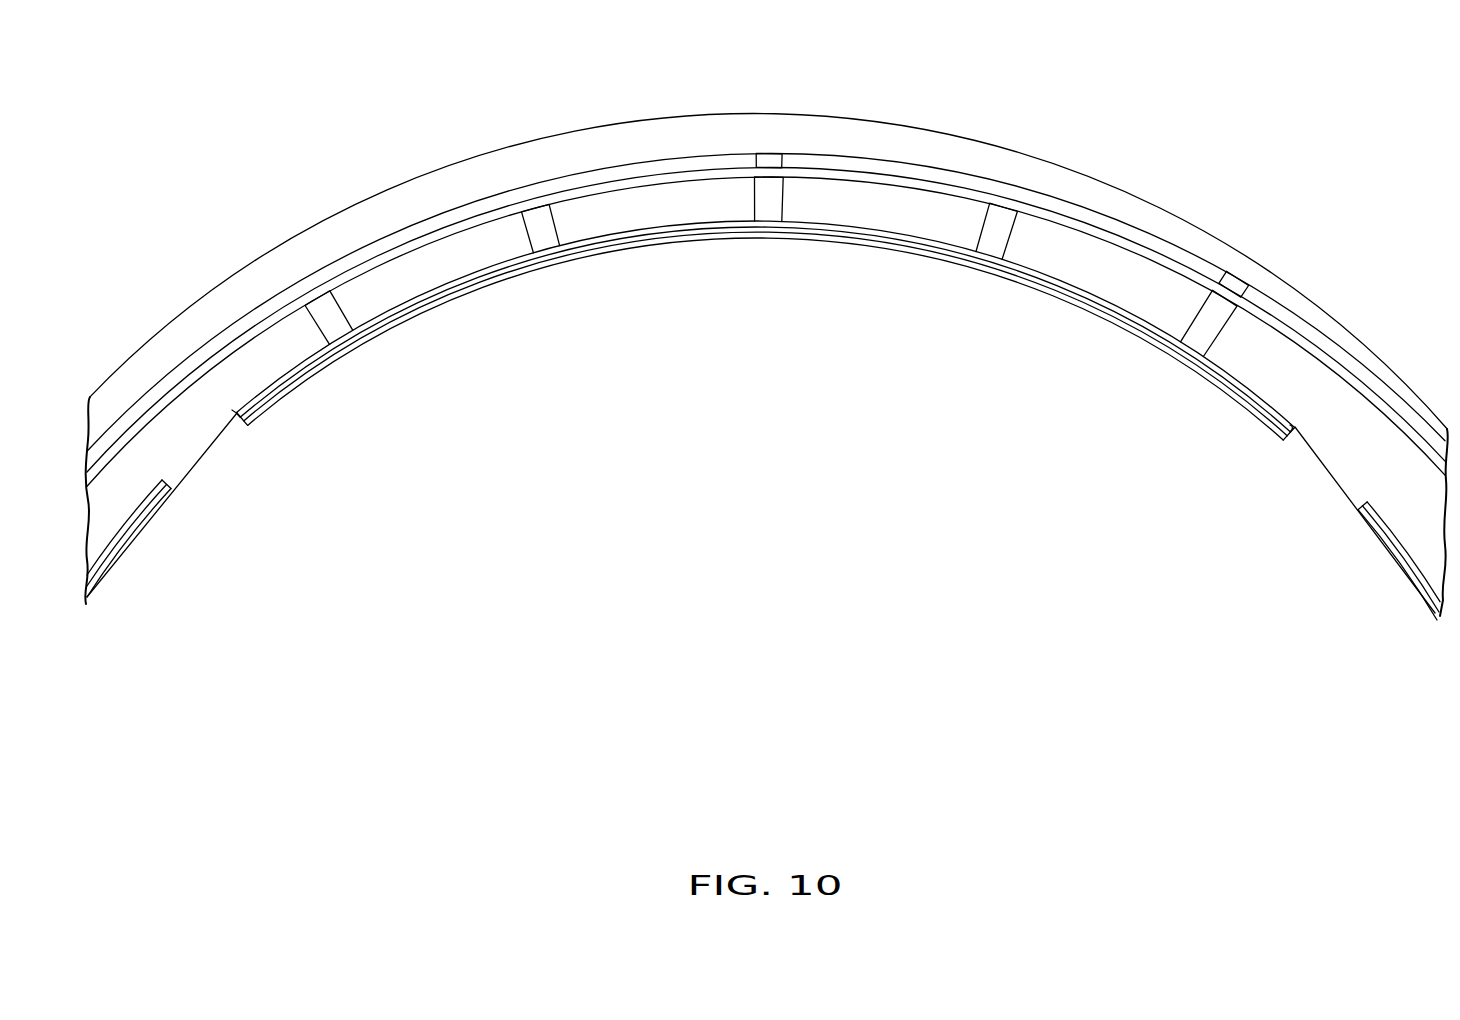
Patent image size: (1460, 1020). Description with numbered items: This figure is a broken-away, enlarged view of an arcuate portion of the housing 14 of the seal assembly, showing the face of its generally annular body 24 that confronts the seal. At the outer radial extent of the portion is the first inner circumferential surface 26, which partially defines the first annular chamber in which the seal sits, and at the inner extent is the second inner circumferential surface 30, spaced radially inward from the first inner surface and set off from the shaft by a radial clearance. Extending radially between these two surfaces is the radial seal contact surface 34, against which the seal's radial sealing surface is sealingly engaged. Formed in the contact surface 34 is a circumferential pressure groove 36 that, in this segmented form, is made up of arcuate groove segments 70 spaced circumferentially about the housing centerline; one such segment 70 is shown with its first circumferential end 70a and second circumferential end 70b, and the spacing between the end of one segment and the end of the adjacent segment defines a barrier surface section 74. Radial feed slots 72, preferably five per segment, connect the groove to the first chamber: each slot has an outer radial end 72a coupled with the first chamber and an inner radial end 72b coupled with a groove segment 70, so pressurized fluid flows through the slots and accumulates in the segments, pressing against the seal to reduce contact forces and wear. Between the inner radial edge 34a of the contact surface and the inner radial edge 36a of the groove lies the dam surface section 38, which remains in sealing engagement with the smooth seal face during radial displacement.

The housing 14 is at (408, 118).
The annular body 24 is at (639, 116).
The first inner circumferential surface 26 is at (437, 226).
The second inner circumferential surface 30 is at (605, 258).
The radial seal contact surface 34 is at (893, 210).
The inner radial edge 34a is at (326, 367).
The circumferential pressure groove 36 is at (428, 305).
The inner radial edge of the pressure groove 36a is at (386, 316).
The dam surface section 38 is at (356, 347).
The arcuate groove segment 70 is at (683, 233).
The first circumferential end 70a is at (249, 414).
The second circumferential end 70b is at (164, 486).
The radial feed slot 72 is at (533, 208).
The outer radial end 72a is at (768, 178).
The inner radial end 72b is at (770, 224).
The barrier surface section 74 is at (208, 451).